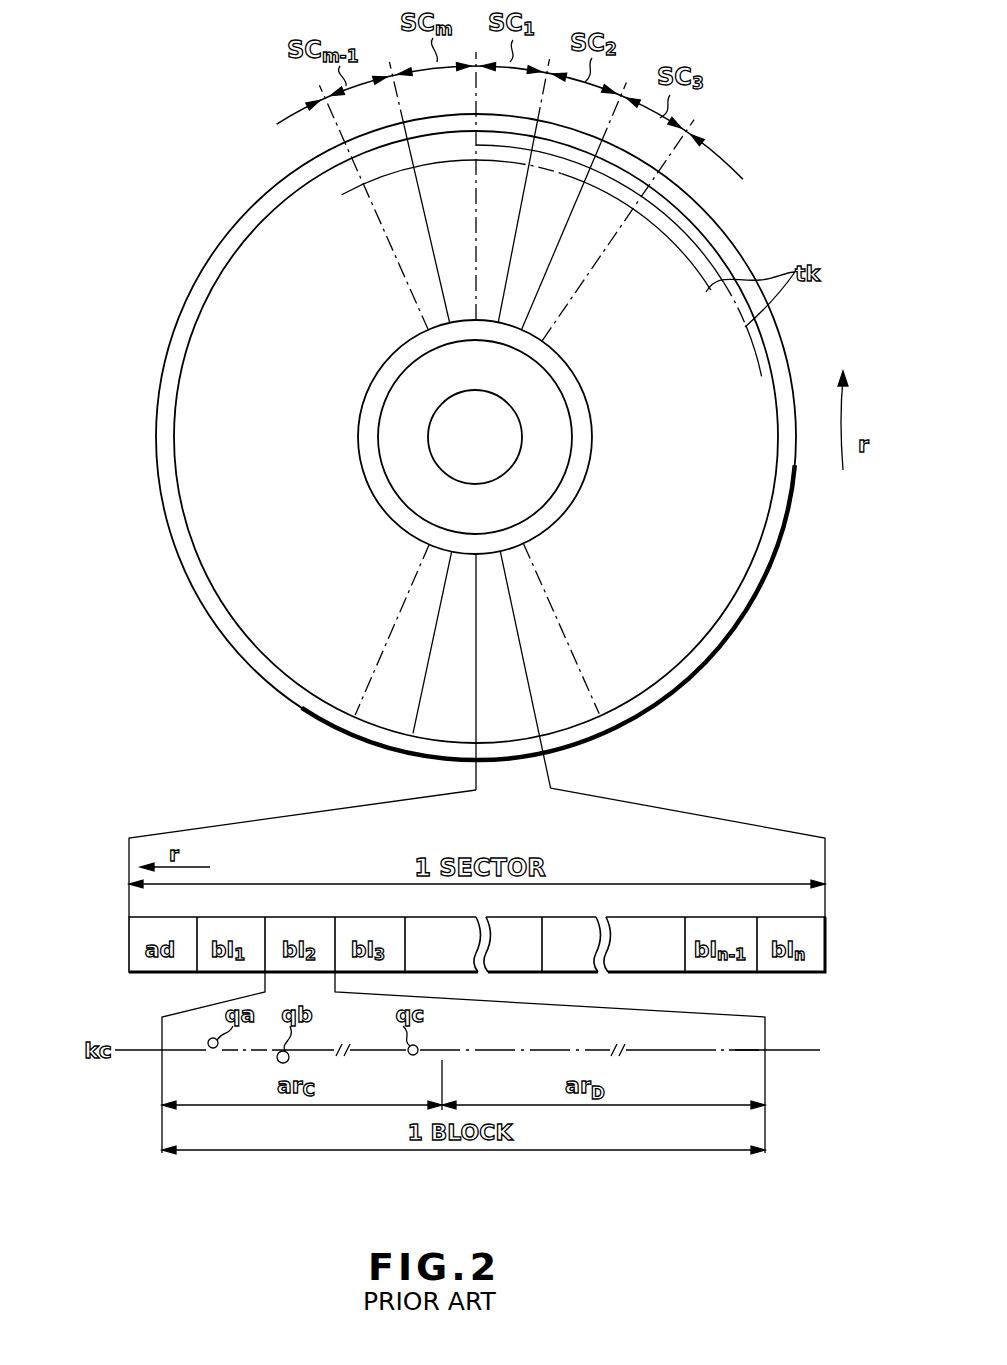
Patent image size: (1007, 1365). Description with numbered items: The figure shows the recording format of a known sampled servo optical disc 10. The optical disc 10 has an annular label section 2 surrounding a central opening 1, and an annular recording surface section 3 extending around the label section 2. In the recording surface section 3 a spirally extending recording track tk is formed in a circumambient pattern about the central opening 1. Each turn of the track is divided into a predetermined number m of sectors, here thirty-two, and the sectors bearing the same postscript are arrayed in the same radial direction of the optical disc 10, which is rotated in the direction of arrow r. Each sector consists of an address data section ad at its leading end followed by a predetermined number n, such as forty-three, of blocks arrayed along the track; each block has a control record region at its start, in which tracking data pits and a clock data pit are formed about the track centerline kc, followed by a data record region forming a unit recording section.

The central opening 1 is at (428, 422).
The label section 2 is at (387, 420).
The recording surface section 3 is at (729, 588).
The optical disc 10 is at (720, 668).